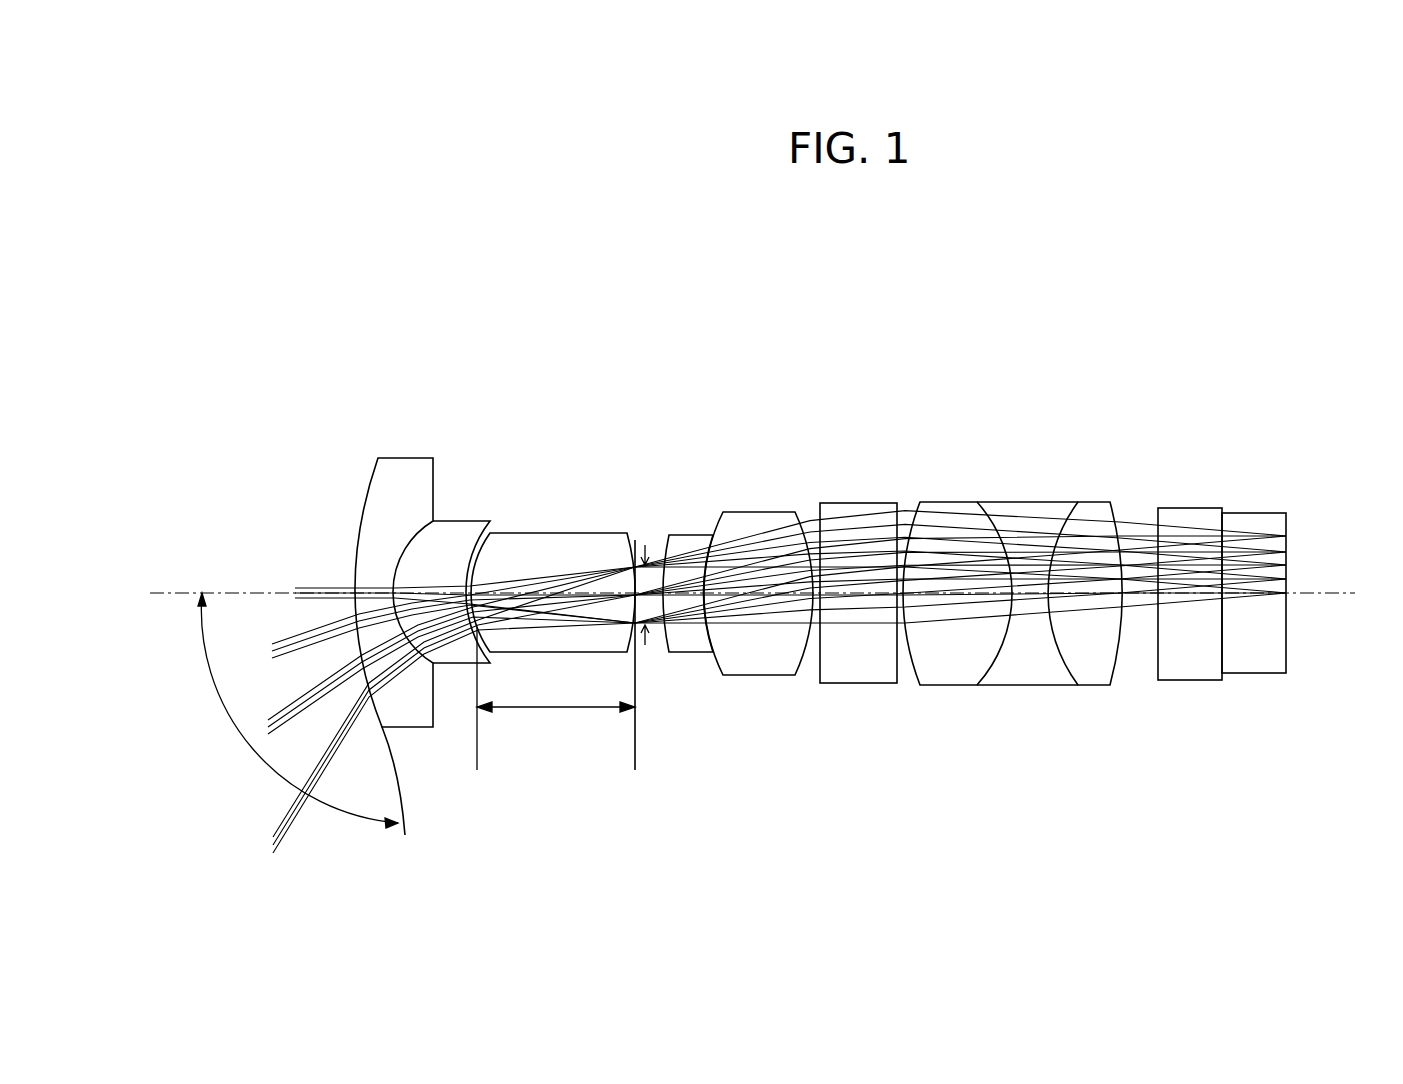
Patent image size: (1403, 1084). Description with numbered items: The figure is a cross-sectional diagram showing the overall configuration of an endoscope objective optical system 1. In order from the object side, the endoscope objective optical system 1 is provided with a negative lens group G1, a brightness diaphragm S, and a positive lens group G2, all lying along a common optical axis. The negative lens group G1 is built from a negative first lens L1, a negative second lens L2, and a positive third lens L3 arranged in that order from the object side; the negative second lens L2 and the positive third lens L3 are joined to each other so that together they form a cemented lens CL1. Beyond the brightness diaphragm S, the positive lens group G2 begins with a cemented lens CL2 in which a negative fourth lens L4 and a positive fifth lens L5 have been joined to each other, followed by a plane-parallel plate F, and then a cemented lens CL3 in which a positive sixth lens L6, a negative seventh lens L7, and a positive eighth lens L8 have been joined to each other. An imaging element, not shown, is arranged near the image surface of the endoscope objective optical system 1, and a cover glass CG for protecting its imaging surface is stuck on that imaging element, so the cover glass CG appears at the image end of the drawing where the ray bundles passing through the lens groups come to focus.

The endoscope objective optical system 1 is at (738, 308).
The negative lens group G1 is at (635, 357).
The positive lens group G2 is at (660, 480).
The cover glass CG is at (1150, 480).
The negative first lens L1 is at (404, 458).
The negative second lens L2 is at (457, 521).
The positive third lens L3 is at (541, 533).
The negative fourth lens L4 is at (693, 652).
The positive fifth lens L5 is at (757, 675).
The positive sixth lens L6 is at (940, 685).
The negative seventh lens L7 is at (1025, 685).
The positive eighth lens L8 is at (1090, 685).
The plane-parallel plate F is at (854, 683).
The brightness diaphragm S is at (645, 545).
The cemented lens CL1 is at (580, 470).
The cemented lens CL2 is at (710, 732).
The cemented lens CL3 is at (1055, 760).